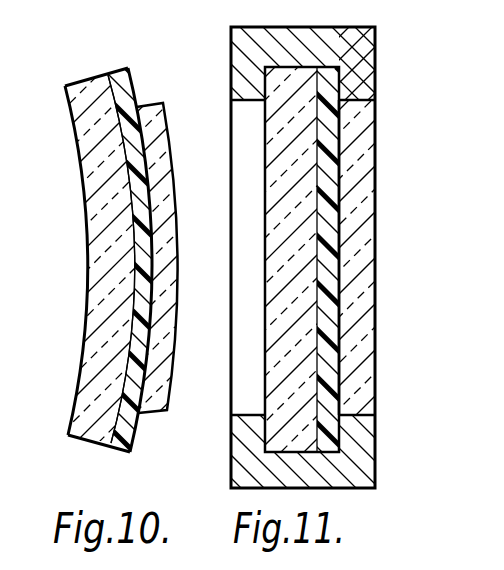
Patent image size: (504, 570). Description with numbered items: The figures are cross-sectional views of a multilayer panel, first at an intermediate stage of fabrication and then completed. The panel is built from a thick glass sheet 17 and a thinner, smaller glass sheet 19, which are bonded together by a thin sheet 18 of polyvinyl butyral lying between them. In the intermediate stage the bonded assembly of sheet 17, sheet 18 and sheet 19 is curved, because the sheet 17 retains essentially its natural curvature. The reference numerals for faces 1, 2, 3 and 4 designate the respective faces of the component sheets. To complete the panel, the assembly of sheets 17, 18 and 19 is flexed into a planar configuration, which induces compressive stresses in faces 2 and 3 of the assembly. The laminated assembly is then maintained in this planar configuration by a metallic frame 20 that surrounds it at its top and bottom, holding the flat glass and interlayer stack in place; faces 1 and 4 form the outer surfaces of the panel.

In FIG. 10, the face 1 is at (77, 145).
In FIG. 11, the face 1 is at (266, 170).
In FIG. 10, the face 2 is at (118, 83).
In FIG. 11, the face 2 is at (372, 48).
In FIG. 10, the face 3 is at (121, 105).
In FIG. 11, the face 3 is at (335, 133).
In FIG. 10, the face 4 is at (167, 140).
In FIG. 11, the face 4 is at (375, 152).
In FIG. 10, the sheet 17 is at (103, 343).
In FIG. 11, the sheet 17 is at (290, 350).
In FIG. 10, the sheet of polyvinyl butyral 18 is at (140, 420).
In FIG. 11, the sheet of polyvinyl butyral 18 is at (337, 372).
In FIG. 10, the sheet 19 is at (155, 390).
In FIG. 11, the sheet 19 is at (368, 340).
In FIG. 11, the frame 20 is at (250, 438).